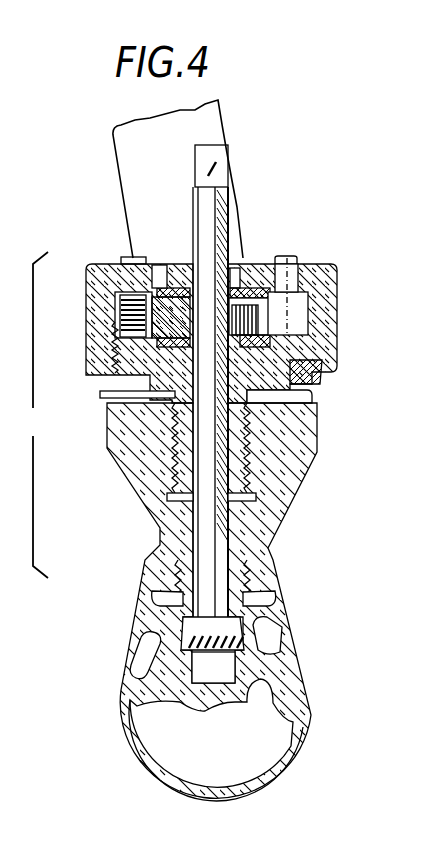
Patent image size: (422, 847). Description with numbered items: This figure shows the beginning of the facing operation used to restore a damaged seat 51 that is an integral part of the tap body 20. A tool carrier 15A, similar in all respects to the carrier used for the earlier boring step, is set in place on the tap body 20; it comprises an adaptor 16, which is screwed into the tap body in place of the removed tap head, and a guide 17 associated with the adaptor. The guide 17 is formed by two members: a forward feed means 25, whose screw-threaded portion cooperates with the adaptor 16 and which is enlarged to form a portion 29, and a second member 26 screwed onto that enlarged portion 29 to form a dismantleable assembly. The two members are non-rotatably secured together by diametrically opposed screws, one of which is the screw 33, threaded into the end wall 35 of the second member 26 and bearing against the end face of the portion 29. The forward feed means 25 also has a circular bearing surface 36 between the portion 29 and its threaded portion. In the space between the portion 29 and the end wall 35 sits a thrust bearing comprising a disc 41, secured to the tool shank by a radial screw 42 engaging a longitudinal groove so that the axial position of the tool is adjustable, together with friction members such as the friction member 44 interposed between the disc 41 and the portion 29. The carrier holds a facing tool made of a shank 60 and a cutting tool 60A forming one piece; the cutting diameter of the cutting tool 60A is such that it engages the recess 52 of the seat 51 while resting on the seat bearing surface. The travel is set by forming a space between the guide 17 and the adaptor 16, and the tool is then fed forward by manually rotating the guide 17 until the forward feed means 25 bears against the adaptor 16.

The tool carrier 15A is at (36, 415).
The adaptor 16 is at (140, 503).
The guide 17 is at (92, 376).
The tap body 20 is at (133, 630).
The forward feed means 25 is at (292, 382).
The second member 26 is at (334, 267).
The enlarged portion 29 is at (336, 363).
The screw 33 is at (146, 262).
The end wall 35 is at (236, 306).
The circular bearing surface 36 is at (267, 405).
The disc 41 is at (120, 318).
The radial screw 42 is at (270, 306).
The friction member 44 is at (158, 288).
The seat 51 is at (160, 660).
The recess 52 is at (246, 640).
The shank 60 is at (222, 543).
The cutting tool 60A is at (227, 632).